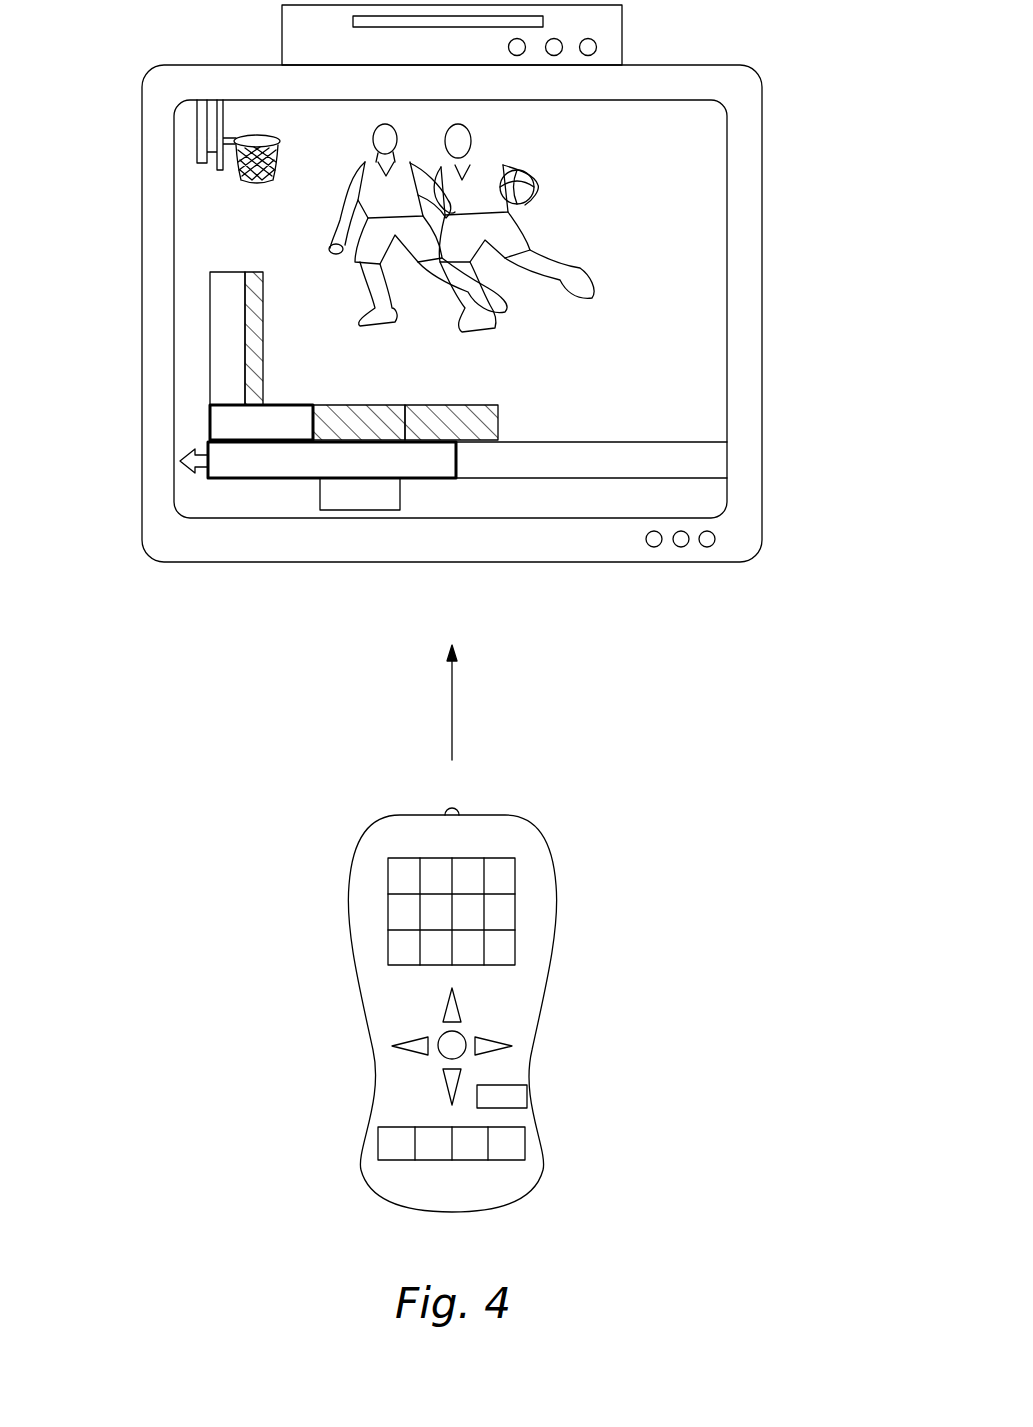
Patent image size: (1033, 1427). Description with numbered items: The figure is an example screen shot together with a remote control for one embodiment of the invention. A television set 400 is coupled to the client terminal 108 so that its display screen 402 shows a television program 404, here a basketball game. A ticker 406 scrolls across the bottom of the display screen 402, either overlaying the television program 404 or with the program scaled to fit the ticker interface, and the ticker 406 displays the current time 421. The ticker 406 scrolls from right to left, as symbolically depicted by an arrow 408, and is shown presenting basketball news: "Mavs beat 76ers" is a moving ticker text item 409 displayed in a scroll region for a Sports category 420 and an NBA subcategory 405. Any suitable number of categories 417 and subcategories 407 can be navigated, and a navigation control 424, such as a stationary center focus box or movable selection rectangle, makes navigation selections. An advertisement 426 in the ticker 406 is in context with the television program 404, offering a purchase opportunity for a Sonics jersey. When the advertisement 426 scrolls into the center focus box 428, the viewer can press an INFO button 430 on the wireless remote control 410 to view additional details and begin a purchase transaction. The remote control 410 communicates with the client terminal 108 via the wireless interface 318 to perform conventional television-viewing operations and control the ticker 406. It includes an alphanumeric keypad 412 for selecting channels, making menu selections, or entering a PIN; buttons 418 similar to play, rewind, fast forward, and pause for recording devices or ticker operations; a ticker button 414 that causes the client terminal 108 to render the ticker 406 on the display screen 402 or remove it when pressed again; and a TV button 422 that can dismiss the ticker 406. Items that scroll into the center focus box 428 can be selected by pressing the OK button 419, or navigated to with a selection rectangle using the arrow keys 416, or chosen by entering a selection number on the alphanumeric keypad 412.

The client terminal 108 is at (282, 18).
The wireless interface 318 is at (597, 47).
The television set 400 is at (158, 98).
The display screen 402 is at (728, 170).
The television program 404 is at (640, 277).
The NBA subcategory 405 is at (225, 421).
The ticker 406 is at (590, 440).
The subcategories 407 is at (363, 405).
The arrow 408 is at (178, 476).
The moving ticker text item 409 is at (483, 470).
The wireless remote control 410 is at (395, 838).
The alphanumeric keypad 412 is at (385, 908).
The ticker button 414 is at (515, 945).
The arrow keys 416 is at (484, 1025).
The categories 417 is at (252, 272).
The buttons 418 is at (532, 1140).
The OK button 419 is at (440, 1057).
The Sports category 420 is at (210, 318).
The current time 421 is at (358, 510).
The TV button 422 is at (475, 965).
The navigation control 424 is at (302, 405).
The advertisement 426 is at (267, 470).
The center focus box 428 is at (208, 478).
The INFO button 430 is at (527, 1100).